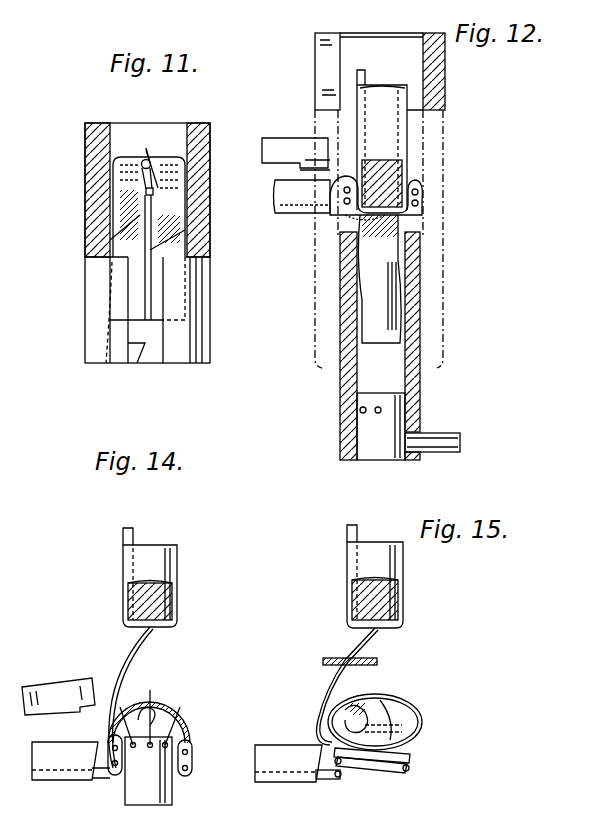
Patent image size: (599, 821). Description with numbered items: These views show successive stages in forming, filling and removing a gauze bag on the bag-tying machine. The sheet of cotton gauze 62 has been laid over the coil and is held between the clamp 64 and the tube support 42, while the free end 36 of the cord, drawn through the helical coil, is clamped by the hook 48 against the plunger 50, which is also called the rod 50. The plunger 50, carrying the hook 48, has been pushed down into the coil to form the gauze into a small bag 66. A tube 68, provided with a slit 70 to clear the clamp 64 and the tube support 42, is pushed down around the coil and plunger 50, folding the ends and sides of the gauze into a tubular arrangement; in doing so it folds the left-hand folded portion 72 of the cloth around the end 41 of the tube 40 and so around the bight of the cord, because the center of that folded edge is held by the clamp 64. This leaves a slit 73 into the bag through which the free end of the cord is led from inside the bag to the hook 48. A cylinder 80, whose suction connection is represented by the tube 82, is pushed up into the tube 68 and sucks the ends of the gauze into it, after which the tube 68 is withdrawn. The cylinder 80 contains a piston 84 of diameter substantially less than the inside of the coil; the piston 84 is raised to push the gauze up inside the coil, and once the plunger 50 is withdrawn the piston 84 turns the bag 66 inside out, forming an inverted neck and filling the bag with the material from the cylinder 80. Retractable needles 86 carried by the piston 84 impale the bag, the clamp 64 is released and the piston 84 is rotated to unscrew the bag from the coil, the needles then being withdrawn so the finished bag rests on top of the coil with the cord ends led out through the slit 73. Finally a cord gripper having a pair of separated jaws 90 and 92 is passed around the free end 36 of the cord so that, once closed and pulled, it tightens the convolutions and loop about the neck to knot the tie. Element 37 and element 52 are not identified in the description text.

In FIG. 14, the free end of the cord 36 is at (131, 697).
In FIG. 15, the free end of the cord 36 is at (330, 678).
In FIG. 14, the clip 37 is at (128, 782).
In FIG. 11, the tube 40 is at (135, 183).
In FIG. 14, the tube 40 is at (195, 752).
In FIG. 15, the tube 40 is at (410, 768).
In FIG. 11, the end of the tube 41 is at (190, 180).
In FIG. 15, the end of the tube 41 is at (333, 783).
In FIG. 12, the tube support 42 is at (297, 215).
In FIG. 14, the tube support 42 is at (78, 780).
In FIG. 15, the tube support 42 is at (285, 748).
In FIG. 14, the hook 48 is at (180, 620).
In FIG. 15, the hook 48 is at (400, 620).
In FIG. 14, the plunger 50 is at (157, 570).
In FIG. 15, the plunger 50 is at (372, 552).
In FIG. 14, the member 52 is at (142, 814).
In FIG. 11, the sheet of cotton gauze 62 is at (165, 225).
In FIG. 14, the sheet of cotton gauze 62 is at (185, 730).
In FIG. 15, the sheet of cotton gauze 62 is at (415, 710).
In FIG. 12, the clamp 64 is at (282, 142).
In FIG. 14, the clamp 64 is at (52, 686).
In FIG. 12, the bag 66 is at (420, 232).
In FIG. 11, the tube 68 is at (105, 243).
In FIG. 12, the tube 68 is at (430, 112).
In FIG. 11, the slit 70 is at (137, 355).
In FIG. 12, the slit 70 is at (318, 66).
In FIG. 11, the left-hand folded portion of the cloth 72 is at (152, 232).
In FIG. 12, the left-hand folded portion of the cloth 72 is at (375, 240).
In FIG. 11, the slit 73 is at (172, 242).
In FIG. 12, the cylinder 80 is at (340, 395).
In FIG. 12, the tube 82 is at (447, 438).
In FIG. 12, the piston 84 is at (370, 433).
In FIG. 14, the piston 84 is at (178, 795).
In FIG. 14, the retractable needles 86 is at (165, 705).
In FIG. 15, the jaw 90 is at (336, 656).
In FIG. 15, the jaw 92 is at (378, 658).